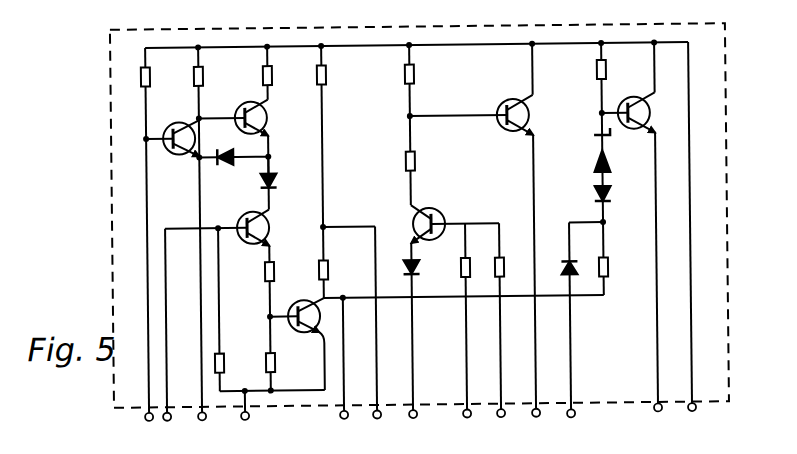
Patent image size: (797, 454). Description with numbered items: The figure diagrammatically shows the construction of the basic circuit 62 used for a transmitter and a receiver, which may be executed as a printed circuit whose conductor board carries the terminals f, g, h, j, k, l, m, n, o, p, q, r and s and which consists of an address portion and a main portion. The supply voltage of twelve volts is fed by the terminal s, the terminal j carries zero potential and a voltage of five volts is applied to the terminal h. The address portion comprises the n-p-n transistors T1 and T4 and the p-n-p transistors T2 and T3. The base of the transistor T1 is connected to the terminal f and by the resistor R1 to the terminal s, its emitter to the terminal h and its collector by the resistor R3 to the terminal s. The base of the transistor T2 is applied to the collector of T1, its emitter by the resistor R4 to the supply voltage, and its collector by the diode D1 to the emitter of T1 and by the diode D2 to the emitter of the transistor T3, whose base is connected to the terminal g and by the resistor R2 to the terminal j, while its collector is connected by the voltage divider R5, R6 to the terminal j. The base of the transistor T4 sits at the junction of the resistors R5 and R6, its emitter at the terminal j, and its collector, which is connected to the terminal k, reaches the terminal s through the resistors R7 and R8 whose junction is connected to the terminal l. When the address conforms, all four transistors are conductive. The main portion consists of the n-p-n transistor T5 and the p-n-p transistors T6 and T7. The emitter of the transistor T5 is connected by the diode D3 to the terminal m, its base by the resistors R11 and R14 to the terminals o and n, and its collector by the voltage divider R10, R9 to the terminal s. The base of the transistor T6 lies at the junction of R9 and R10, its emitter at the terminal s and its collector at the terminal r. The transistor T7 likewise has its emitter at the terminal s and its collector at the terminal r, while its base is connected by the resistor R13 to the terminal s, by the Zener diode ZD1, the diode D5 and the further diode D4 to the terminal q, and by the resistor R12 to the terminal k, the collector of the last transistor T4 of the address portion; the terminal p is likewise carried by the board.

The basic circuit 62 is at (112, 168).
The resistor R1 is at (159, 79).
The resistor R2 is at (234, 365).
The resistor R3 is at (212, 78).
The resistor R4 is at (281, 77).
The voltage divider resistor R5 is at (255, 275).
The voltage divider resistor R6 is at (286, 364).
The resistor R7 is at (337, 273).
The resistor R8 is at (335, 77).
The voltage divider resistor R9 is at (423, 76).
The voltage divider resistor R10 is at (428, 163).
The resistor R11 is at (516, 277).
The resistor R12 is at (621, 270).
The resistor R13 is at (618, 72).
The resistor R14 is at (454, 278).
The first n-p-n transistor T1 is at (173, 132).
The first p-n-p transistor T2 is at (264, 117).
The second p-n-p transistor T3 is at (265, 227).
The second n-p-n transistor T4 is at (304, 336).
The n-p-n transistor T5 is at (435, 217).
The first p-n-p transistor T6 is at (504, 108).
The second p-n-p transistor T7 is at (648, 112).
The diode D1 is at (234, 174).
The diode D2 is at (282, 173).
The diode D3 is at (402, 275).
The further diode D4 is at (560, 277).
The diode D5 is at (589, 200).
The Zener diode ZD1 is at (581, 150).
The terminal f is at (149, 430).
The terminal g is at (168, 430).
The terminal h is at (204, 429).
The terminal j is at (244, 429).
The terminal k is at (345, 428).
The terminal l is at (377, 427).
The terminal m is at (414, 427).
The terminal n is at (468, 426).
The terminal o is at (502, 426).
The terminal p is at (536, 426).
The terminal q is at (572, 425).
The terminal r is at (658, 420).
The supply terminal s is at (693, 420).